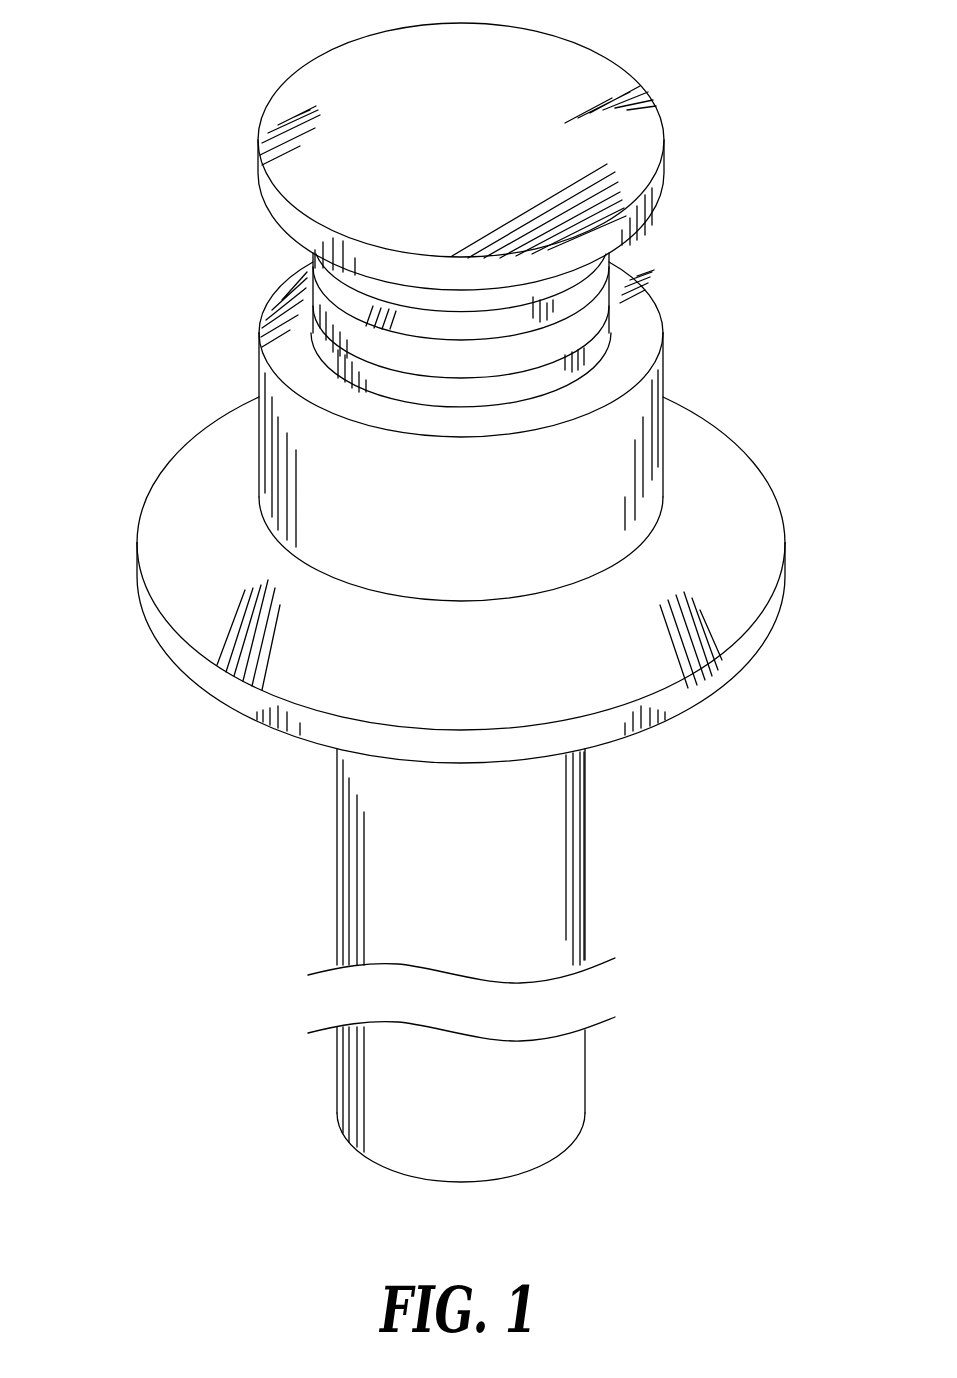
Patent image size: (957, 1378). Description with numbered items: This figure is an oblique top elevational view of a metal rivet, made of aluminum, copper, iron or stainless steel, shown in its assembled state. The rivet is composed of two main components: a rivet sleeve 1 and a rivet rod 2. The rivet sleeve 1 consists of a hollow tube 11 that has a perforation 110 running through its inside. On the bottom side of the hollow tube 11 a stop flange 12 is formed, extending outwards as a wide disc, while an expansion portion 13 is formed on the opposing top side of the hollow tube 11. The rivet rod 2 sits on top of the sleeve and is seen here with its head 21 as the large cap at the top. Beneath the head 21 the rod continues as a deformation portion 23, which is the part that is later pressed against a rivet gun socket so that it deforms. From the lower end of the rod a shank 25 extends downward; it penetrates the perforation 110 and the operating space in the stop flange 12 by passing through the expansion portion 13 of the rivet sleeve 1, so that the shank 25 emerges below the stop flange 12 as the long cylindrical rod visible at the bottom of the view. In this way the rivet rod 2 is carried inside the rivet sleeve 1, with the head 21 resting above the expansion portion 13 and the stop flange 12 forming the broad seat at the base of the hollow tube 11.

The rivet sleeve 1 is at (460, 722).
The rivet rod 2 is at (464, 207).
The hollow tube 11 is at (529, 431).
The stop flange 12 is at (742, 513).
The expansion portion 13 is at (647, 317).
The head 21 is at (645, 152).
The deformation portion 23 is at (623, 255).
The shank 25 is at (555, 900).
The perforation 110 is at (603, 344).